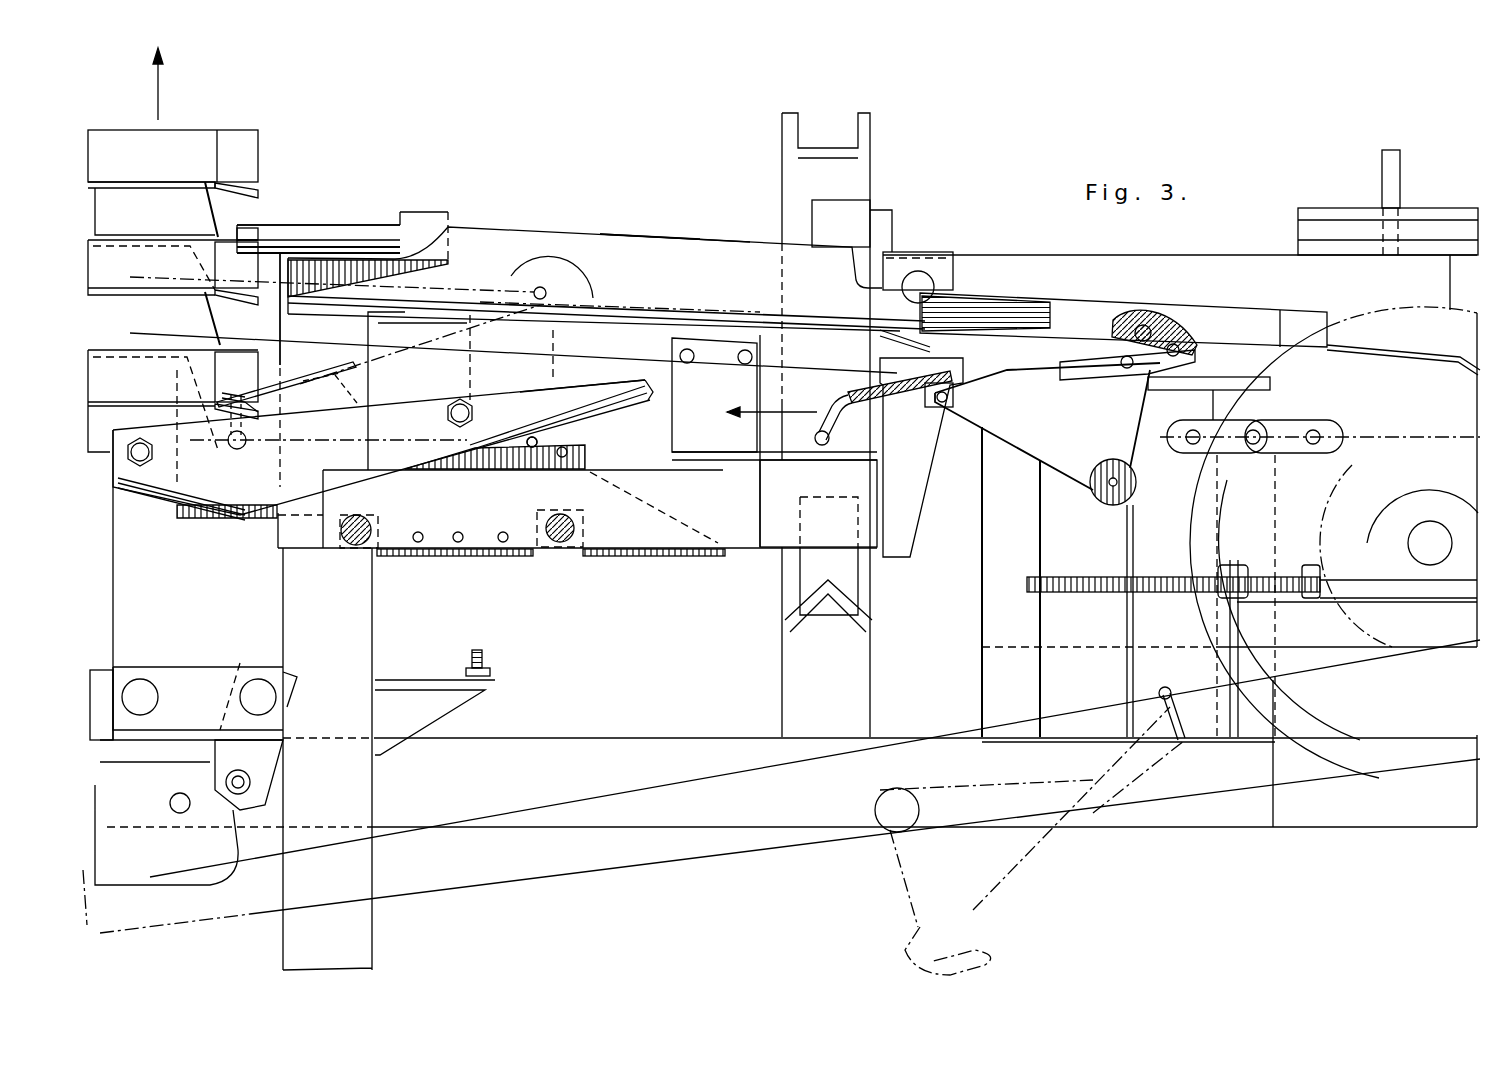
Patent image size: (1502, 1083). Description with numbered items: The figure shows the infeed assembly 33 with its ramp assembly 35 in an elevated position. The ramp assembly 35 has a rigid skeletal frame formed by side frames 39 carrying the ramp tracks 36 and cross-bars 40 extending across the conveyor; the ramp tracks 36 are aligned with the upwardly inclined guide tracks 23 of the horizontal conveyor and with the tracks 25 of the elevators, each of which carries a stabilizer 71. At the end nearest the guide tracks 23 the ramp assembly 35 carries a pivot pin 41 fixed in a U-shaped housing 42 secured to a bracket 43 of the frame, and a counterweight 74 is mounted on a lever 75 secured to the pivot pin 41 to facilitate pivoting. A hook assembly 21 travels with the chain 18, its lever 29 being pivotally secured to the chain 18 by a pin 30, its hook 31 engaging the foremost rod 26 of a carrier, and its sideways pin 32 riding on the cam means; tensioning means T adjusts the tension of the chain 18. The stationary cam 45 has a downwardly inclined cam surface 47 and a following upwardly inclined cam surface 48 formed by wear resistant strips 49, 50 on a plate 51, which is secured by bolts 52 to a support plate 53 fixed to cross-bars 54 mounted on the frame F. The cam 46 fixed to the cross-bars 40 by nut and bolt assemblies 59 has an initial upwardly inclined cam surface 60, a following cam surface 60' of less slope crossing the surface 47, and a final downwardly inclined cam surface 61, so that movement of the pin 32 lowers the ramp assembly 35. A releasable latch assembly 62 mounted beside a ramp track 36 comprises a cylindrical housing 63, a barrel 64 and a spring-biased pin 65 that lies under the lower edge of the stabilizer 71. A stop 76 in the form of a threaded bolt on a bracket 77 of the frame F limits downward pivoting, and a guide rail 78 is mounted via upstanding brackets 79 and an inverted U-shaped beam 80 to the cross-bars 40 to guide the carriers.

The tracks of the elevators 25 is at (198, 140).
The stabilizer 71 is at (205, 210).
The barrel 64 is at (341, 226).
The pin 65 is at (243, 230).
The releasable latch assembly 62 is at (379, 212).
The cylindrical housing 63 is at (440, 212).
The ramp assembly 35 is at (550, 230).
The ramp tracks 36 is at (672, 241).
The infeed assembly 33 is at (634, 205).
The foremost rod 26 is at (533, 292).
The hook 31 is at (580, 283).
The frame F is at (782, 188).
The U-shaped housing 42 is at (935, 252).
The pivot pin 41 is at (935, 282).
The lever 75 is at (1170, 256).
The counterweight 74 is at (1343, 208).
The guide tracks 23 is at (1260, 310).
The chain 18 is at (1193, 430).
The guide rail 78 is at (275, 314).
The upstanding brackets 79 is at (368, 334).
The lever 29 is at (315, 376).
The final downwardly inclined cam surface 61 is at (237, 396).
The bolts 52 is at (138, 438).
The upwardly inclined cam surface 48 is at (163, 520).
The wear resistant strip 50 is at (136, 498).
The plate 51 is at (522, 399).
The stationary cam 45 is at (590, 385).
The wear resistant strip 49 is at (626, 398).
The downwardly inclined cam surface 47 is at (596, 412).
The initial upwardly inclined cam surface 60 is at (565, 471).
The following cam surface 60' is at (547, 468).
The cross-bars 40 is at (353, 548).
The nut and bolt assemblies 59 is at (418, 542).
The cam 46 is at (634, 562).
The side frames 39 is at (758, 552).
The inverted U-shaped beam 80 is at (750, 499).
The bracket 43 is at (908, 537).
The hook assembly 21 is at (1005, 453).
The pin 32 is at (1105, 505).
The pin 30 is at (829, 436).
The support plate 53 is at (178, 616).
The cross-bars 54 is at (245, 694).
The tensioning means T is at (206, 888).
The stop 76 is at (490, 662).
The bracket 77 is at (460, 720).